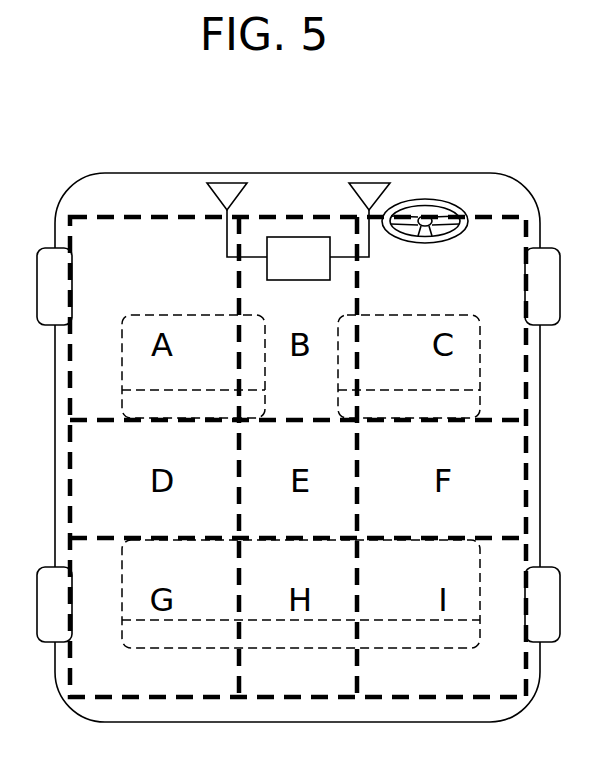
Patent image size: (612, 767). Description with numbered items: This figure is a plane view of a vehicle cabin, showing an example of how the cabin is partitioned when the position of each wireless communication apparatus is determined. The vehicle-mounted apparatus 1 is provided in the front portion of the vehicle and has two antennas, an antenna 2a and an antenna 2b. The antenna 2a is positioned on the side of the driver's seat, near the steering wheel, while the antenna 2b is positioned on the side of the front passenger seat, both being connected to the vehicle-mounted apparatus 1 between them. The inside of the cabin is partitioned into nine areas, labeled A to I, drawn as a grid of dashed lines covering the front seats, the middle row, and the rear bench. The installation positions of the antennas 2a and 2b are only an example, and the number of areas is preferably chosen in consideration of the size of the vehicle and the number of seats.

The vehicle-mounted apparatus 1 is at (297, 237).
The antenna 2a is at (364, 183).
The antenna 2b is at (222, 183).